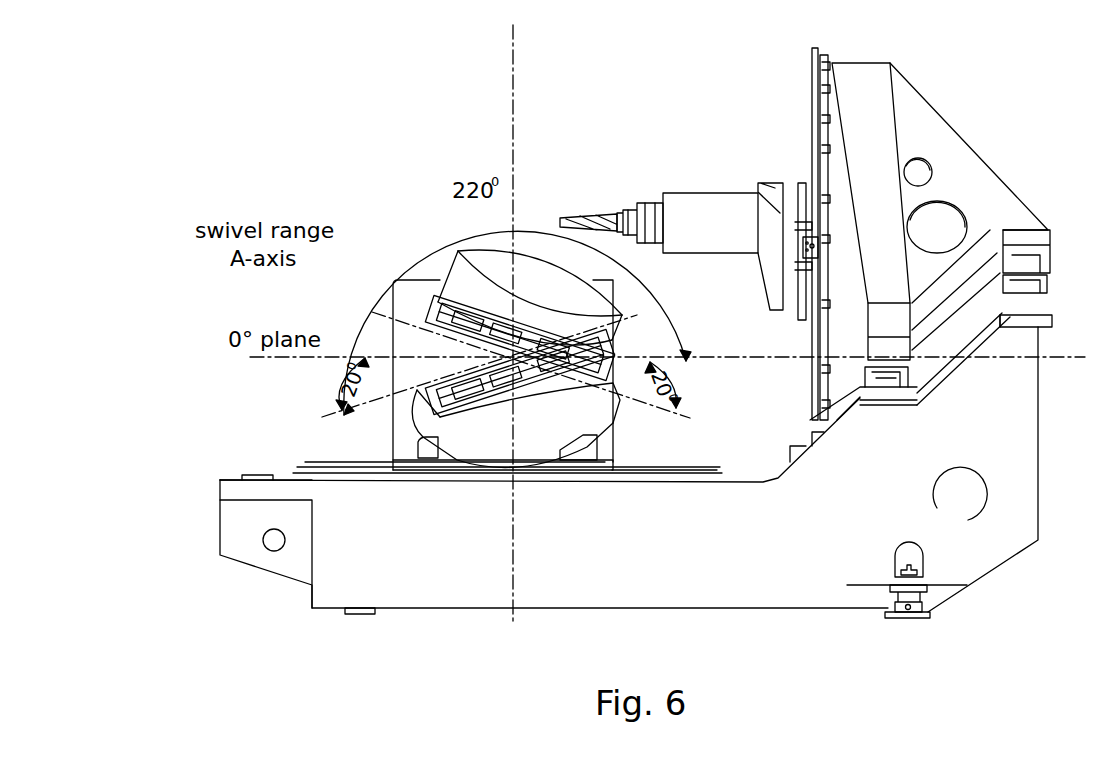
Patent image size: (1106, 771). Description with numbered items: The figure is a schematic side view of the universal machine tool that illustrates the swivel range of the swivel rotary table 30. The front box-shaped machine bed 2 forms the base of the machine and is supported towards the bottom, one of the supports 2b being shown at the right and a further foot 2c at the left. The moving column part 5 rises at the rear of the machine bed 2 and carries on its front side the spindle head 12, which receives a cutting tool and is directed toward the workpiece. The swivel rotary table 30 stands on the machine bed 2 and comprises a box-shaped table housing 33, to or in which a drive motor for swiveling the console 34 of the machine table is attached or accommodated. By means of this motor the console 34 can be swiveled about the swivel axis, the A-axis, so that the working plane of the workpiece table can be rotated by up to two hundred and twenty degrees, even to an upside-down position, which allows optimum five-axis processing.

The machine bed 2 is at (682, 573).
The support 2b is at (912, 620).
The left foot of base 2c is at (352, 614).
The moving column part 5 is at (984, 163).
The spindle head 12 is at (723, 193).
The swivel rotary table 30 is at (492, 357).
The box-shaped table housing 33 is at (393, 432).
The console of the machine table 34 is at (518, 276).